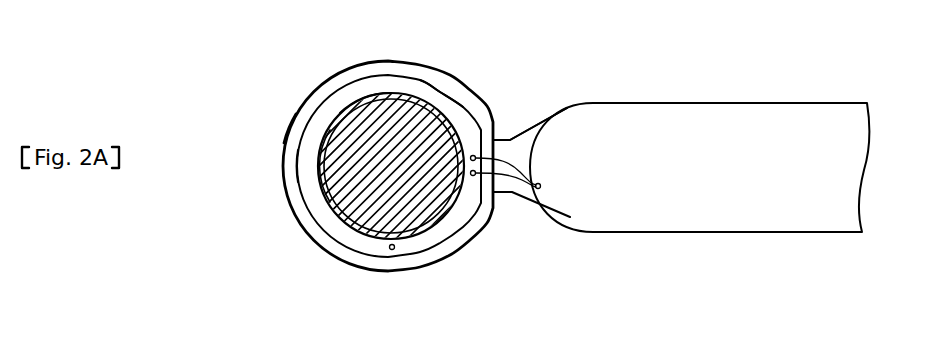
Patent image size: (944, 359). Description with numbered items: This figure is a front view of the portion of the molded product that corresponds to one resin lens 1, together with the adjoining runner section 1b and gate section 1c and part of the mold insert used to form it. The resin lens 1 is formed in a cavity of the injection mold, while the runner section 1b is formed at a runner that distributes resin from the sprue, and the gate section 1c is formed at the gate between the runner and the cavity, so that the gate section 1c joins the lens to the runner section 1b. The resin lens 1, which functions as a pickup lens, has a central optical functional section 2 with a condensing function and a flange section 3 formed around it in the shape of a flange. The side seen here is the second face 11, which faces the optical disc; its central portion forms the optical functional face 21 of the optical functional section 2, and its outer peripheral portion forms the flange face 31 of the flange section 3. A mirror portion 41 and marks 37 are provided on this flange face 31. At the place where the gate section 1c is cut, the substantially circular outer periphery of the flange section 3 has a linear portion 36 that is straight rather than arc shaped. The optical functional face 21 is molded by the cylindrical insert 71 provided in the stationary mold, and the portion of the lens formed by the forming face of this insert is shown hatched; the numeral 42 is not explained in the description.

The resin lens 1 is at (391, 78).
The runner section 1b is at (788, 112).
The gate section 1c is at (530, 143).
The optical functional section 2 is at (340, 130).
The flange section 3 is at (432, 90).
The second face 11 is at (390, 108).
The optical functional face 21 is at (355, 115).
The flange face 31 is at (302, 159).
The linear portion 36 is at (508, 143).
The marks 37 is at (541, 185).
The mirror portion 41 is at (460, 112).
The outer peripheral surface 42 is at (292, 135).
The cylindrical insert 71 is at (342, 178).